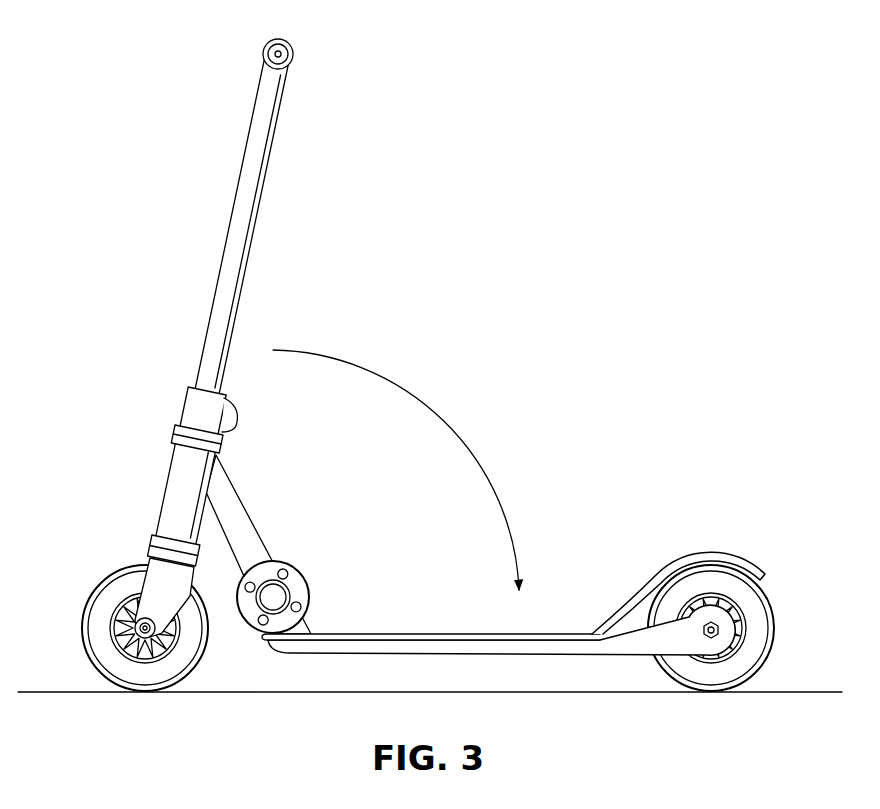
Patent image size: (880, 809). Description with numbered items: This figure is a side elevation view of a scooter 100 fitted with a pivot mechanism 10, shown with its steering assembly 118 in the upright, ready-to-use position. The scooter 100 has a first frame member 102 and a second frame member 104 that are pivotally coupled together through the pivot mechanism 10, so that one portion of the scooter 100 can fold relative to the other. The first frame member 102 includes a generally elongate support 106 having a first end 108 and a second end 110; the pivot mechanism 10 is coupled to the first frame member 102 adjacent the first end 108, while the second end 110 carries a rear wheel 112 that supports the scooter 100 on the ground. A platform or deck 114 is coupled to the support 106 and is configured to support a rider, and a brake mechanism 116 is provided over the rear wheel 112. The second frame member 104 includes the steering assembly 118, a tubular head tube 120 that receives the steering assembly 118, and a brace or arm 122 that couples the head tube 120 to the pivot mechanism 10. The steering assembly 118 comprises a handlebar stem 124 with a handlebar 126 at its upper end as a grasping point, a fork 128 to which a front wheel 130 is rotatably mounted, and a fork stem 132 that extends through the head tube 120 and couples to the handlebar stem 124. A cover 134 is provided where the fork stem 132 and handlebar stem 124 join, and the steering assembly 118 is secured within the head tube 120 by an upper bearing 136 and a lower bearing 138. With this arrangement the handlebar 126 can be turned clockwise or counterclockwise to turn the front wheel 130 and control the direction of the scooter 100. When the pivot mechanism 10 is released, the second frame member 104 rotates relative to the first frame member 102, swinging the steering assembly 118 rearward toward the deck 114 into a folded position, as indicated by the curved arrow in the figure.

The scooter 100 is at (576, 143).
The first frame member 102 is at (473, 638).
The second frame member 104 is at (154, 349).
The elongate support 106 is at (407, 655).
The first end 108 is at (281, 656).
The second end 110 is at (686, 642).
The rear wheel 112 is at (774, 626).
The platform or deck 114 is at (424, 633).
The brake mechanism 116 is at (700, 553).
The steering assembly 118 is at (240, 306).
The head tube 120 is at (172, 477).
The brace or arm 122 is at (237, 494).
The handlebar stem 124 is at (229, 222).
The handlebar 126 is at (295, 54).
The fork 128 is at (103, 591).
The front wheel 130 is at (83, 618).
The fork stem 132 is at (150, 552).
The cover 134 is at (185, 400).
The upper bearing 136 is at (173, 434).
The lower bearing 138 is at (150, 545).
The pivot mechanism 10 is at (302, 570).